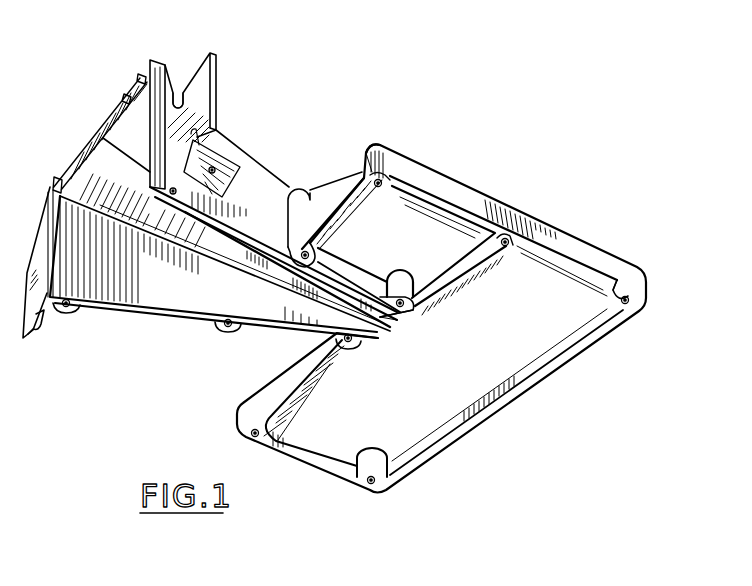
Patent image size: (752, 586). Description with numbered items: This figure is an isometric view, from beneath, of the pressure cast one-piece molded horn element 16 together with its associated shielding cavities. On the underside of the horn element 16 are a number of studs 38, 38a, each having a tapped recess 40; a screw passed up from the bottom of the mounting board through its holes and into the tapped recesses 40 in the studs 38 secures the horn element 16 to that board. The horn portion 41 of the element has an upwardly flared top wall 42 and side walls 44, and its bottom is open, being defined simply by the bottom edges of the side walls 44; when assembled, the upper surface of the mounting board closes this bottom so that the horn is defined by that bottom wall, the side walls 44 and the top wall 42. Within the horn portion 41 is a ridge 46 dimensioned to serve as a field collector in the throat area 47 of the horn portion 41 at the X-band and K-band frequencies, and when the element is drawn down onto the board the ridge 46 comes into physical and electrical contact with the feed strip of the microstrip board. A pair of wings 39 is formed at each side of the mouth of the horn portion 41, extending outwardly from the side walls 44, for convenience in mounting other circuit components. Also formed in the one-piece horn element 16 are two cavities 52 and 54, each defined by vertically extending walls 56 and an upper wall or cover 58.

The one-piece molded horn element 16 is at (153, 332).
The stud 38 is at (221, 332).
The stud 38a is at (380, 188).
The wing 39 is at (207, 95).
The tapped recess 40 is at (380, 178).
The horn portion 41 is at (184, 54).
The top wall 42 is at (104, 113).
The side wall 44 is at (128, 288).
The ridge 46 is at (192, 256).
The throat area 47 is at (402, 333).
The cavity 52 is at (535, 268).
The cavity 54 is at (423, 208).
The vertically extending wall 56 is at (427, 170).
The upper wall or cover 58 is at (363, 143).